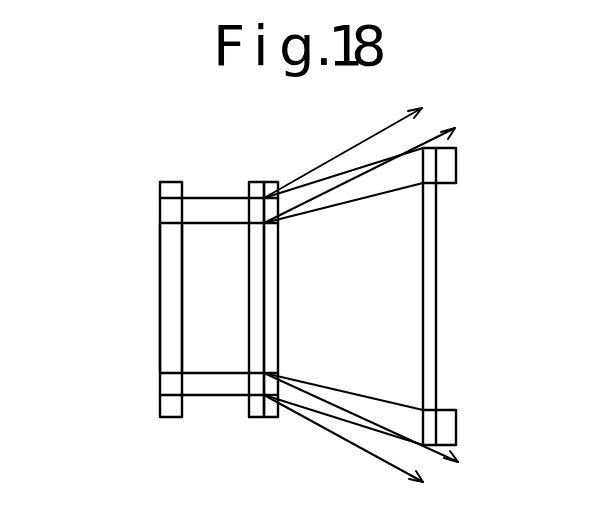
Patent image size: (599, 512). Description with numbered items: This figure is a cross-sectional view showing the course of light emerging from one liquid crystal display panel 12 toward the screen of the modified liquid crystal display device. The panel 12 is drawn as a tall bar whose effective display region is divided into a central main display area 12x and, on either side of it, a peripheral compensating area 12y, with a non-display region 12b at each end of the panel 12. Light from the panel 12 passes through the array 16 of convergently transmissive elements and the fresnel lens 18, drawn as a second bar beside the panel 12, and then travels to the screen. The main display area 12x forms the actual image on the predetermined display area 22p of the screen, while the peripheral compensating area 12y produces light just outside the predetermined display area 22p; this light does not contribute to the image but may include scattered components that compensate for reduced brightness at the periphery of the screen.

The liquid crystal display panel 12 is at (165, 190).
The non-display region 12b is at (166, 190).
The peripheral compensating area 12y is at (170, 213).
The main display area 12x is at (170, 300).
The array of convergently transmissive elements 16 is at (256, 188).
The fresnel lens 18 is at (271, 188).
The predetermined display area 22p is at (436, 282).